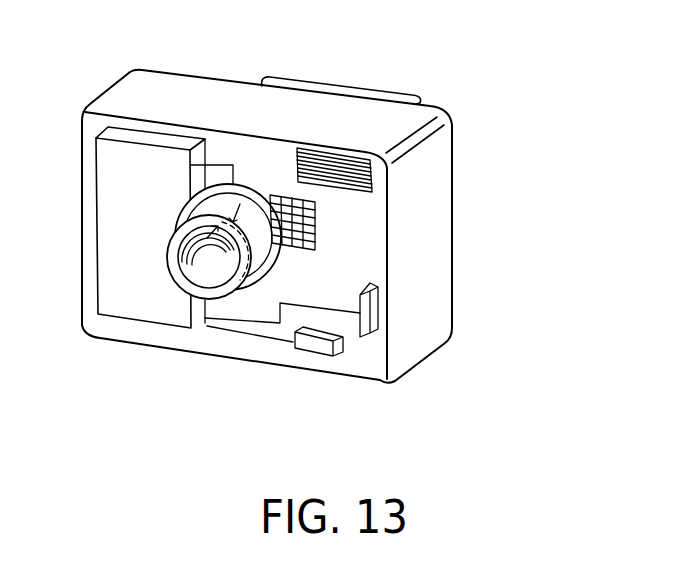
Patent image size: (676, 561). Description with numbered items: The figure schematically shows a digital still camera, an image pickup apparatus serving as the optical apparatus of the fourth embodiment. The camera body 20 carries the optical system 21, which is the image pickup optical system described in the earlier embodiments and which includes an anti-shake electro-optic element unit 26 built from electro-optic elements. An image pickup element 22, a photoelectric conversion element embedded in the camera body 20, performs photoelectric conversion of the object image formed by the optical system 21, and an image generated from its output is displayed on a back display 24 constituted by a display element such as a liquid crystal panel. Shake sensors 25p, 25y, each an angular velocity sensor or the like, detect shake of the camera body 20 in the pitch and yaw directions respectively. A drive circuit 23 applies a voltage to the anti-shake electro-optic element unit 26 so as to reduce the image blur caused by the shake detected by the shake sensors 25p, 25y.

The camera body 20 is at (350, 360).
The optical system 21 is at (220, 283).
The image pickup element 22 is at (315, 245).
The drive circuit 23 is at (127, 303).
The back display 24 is at (360, 90).
The shake sensor 25p is at (387, 320).
The shake sensor 25y is at (310, 353).
The anti-shake electro-optic element unit 26 is at (267, 302).